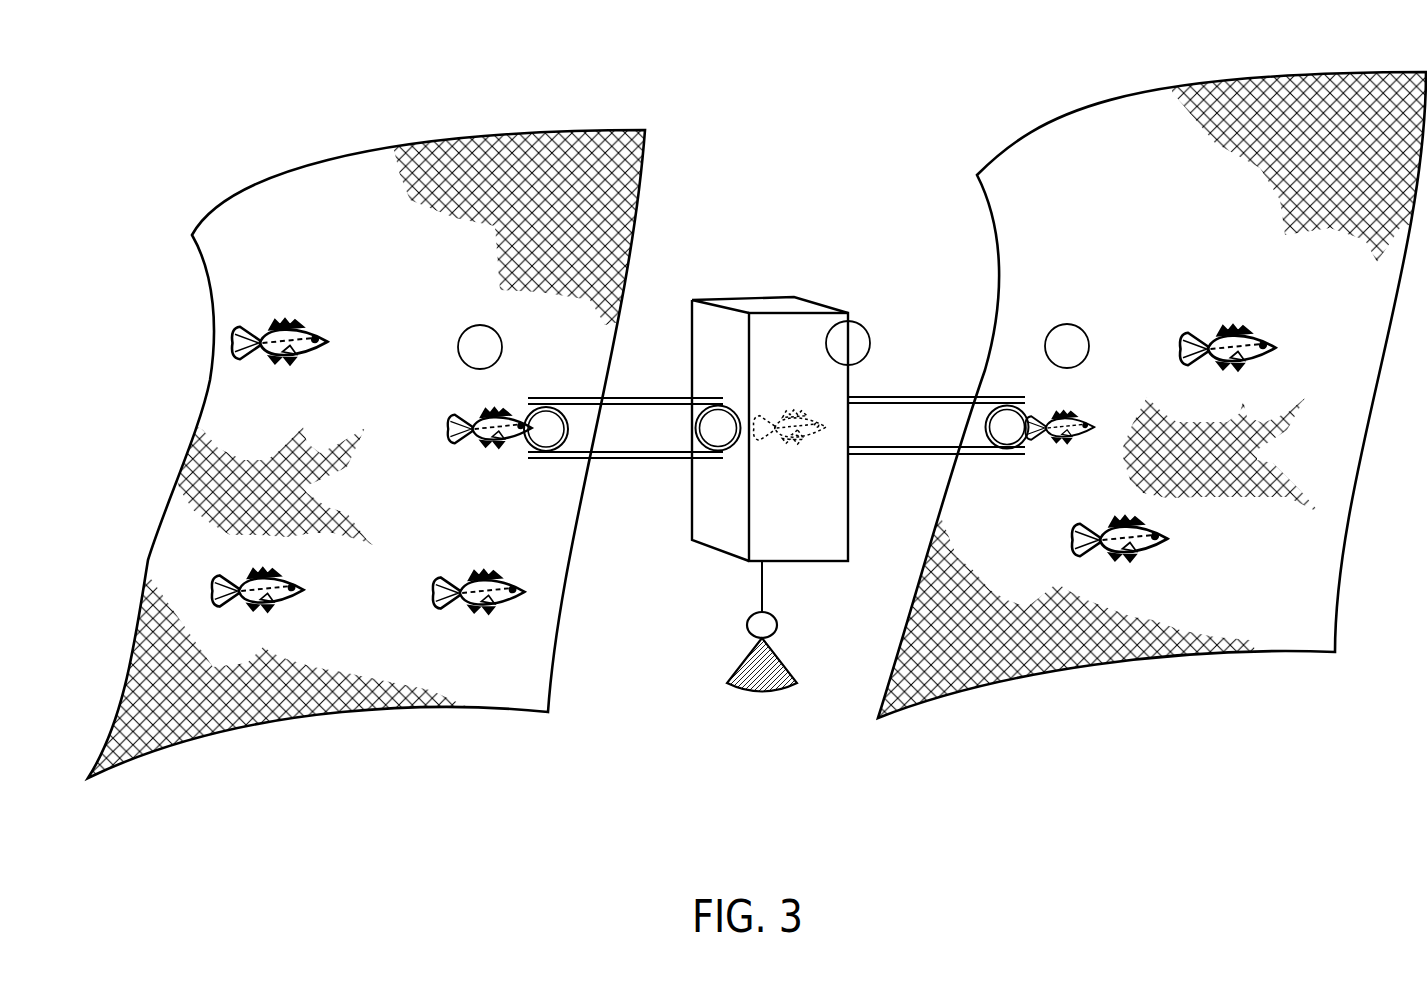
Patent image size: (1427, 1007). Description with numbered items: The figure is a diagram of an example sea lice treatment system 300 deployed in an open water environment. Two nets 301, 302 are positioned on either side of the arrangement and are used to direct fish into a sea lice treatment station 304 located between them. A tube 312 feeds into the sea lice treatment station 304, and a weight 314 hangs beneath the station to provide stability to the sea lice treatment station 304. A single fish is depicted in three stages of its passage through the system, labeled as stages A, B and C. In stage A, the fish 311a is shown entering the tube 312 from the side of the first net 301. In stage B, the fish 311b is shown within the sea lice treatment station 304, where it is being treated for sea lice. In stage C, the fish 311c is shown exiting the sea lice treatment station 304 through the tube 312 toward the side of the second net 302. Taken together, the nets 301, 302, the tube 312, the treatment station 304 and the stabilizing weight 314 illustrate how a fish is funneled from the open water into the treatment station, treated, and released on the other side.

The sea lice treatment system 300 is at (173, 66).
The net 301 is at (356, 170).
The net 302 is at (1031, 152).
The sea lice treatment station 304 is at (678, 534).
The fish 311a is at (485, 410).
The fish 311b is at (800, 408).
The fish 311c is at (1076, 408).
The tube 312 is at (565, 397).
The weight 314 is at (730, 670).